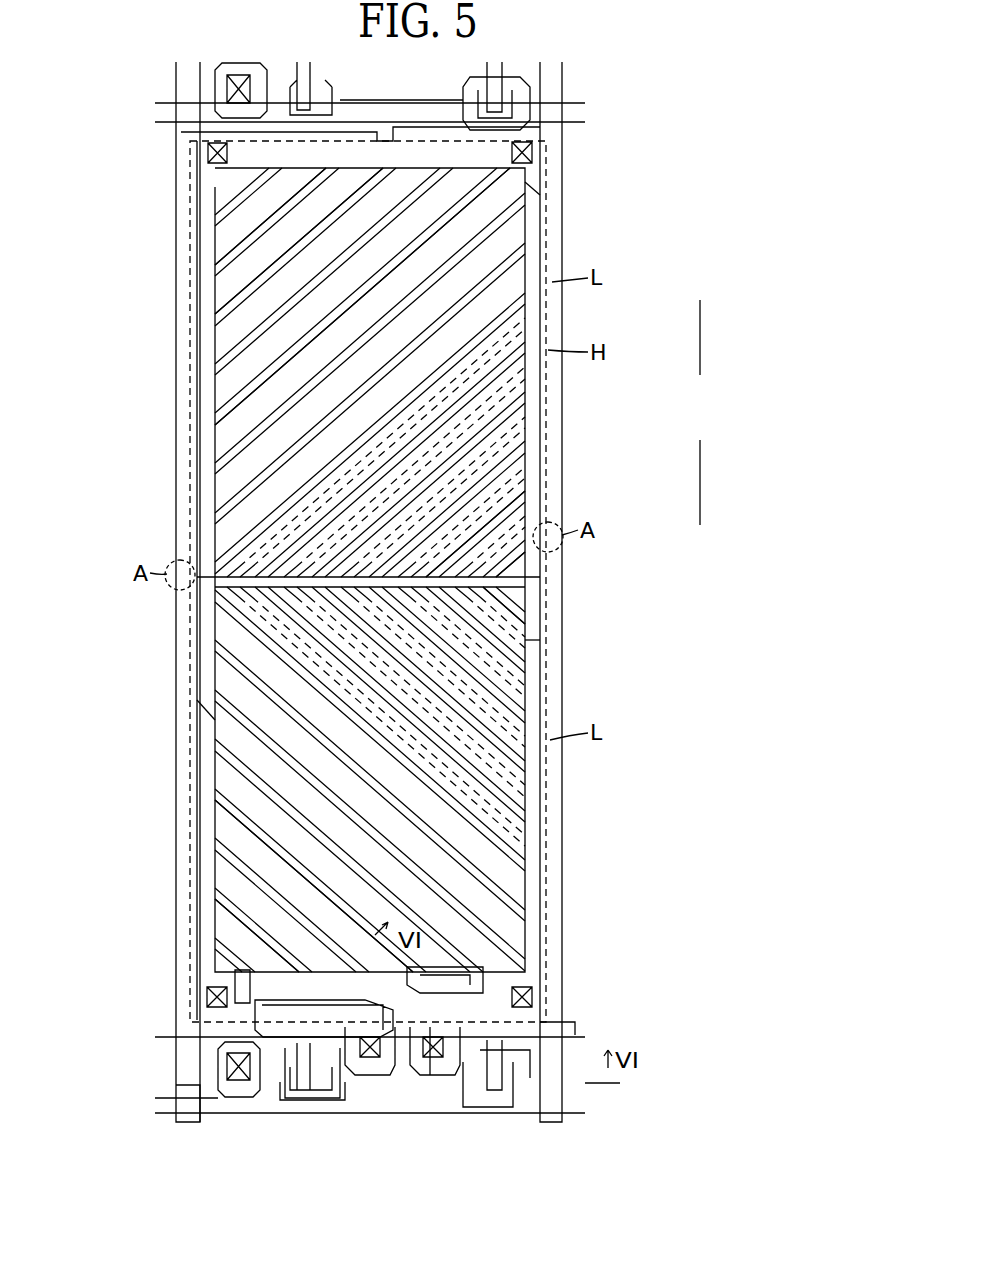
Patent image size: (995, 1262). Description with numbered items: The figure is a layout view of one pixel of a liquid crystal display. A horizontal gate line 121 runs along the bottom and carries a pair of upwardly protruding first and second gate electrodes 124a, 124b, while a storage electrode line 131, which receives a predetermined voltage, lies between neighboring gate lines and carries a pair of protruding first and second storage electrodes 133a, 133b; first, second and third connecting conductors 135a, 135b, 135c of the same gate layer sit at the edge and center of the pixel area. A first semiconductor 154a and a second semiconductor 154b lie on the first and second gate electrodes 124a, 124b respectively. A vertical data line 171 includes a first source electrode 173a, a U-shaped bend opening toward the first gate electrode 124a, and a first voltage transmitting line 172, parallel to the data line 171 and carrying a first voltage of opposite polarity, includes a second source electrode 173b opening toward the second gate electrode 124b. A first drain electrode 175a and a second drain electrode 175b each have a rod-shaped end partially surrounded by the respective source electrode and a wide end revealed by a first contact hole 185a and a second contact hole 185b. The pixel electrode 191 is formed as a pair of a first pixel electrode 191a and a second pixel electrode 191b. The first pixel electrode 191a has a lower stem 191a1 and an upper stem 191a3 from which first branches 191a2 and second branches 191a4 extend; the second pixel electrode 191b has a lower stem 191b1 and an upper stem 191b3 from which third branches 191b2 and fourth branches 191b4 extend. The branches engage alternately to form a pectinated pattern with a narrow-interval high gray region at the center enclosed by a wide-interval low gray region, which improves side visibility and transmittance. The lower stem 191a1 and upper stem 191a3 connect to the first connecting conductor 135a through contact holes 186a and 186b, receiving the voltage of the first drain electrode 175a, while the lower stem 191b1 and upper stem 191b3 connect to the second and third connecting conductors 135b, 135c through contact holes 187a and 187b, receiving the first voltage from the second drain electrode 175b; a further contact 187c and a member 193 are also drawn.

The gate line 121 is at (162, 1115).
The first gate electrode 124a is at (548, 1027).
The second gate electrode 124b is at (290, 1075).
The storage electrode line 131 is at (556, 1000).
The first storage electrode 133a is at (235, 990).
The second storage electrode 133b is at (455, 965).
The first connecting conductor 135a is at (515, 692).
The second connecting conductor 135b is at (215, 722).
The third connecting conductor 135c is at (541, 196).
The first semiconductor 154a is at (522, 1052).
The second semiconductor 154b is at (285, 1058).
The data line 171 is at (580, 1102).
The first voltage transmitting line 172 is at (176, 1095).
The first source electrode 173a is at (520, 1100).
The second source electrode 173b is at (322, 1100).
The first drain electrode 175a is at (478, 1055).
The second drain electrode 175b is at (290, 1040).
The first contact hole 185a is at (433, 1058).
The second contact hole 185b is at (370, 1037).
The contact hole 186a is at (534, 995).
The contact hole 186b is at (206, 153).
The contact hole 187a is at (205, 997).
The contact hole 187b is at (534, 153).
The seventh contact hole 187c is at (227, 1062).
The pixel electrode 191 is at (740, 540).
The first pixel electrode 191a is at (683, 385).
The lower stem 191a1 is at (545, 600).
The first branches 191a2 is at (500, 655).
The upper stem 191a3 is at (196, 275).
The second branches 191a4 is at (250, 310).
The second pixel electrode 191b is at (683, 532).
The lower stem 191b1 is at (215, 925).
The third branches 191b2 is at (225, 825).
The upper stem 191b3 is at (538, 232).
The fourth branches 191b4 is at (265, 400).
The connecting member 193 is at (570, 1092).